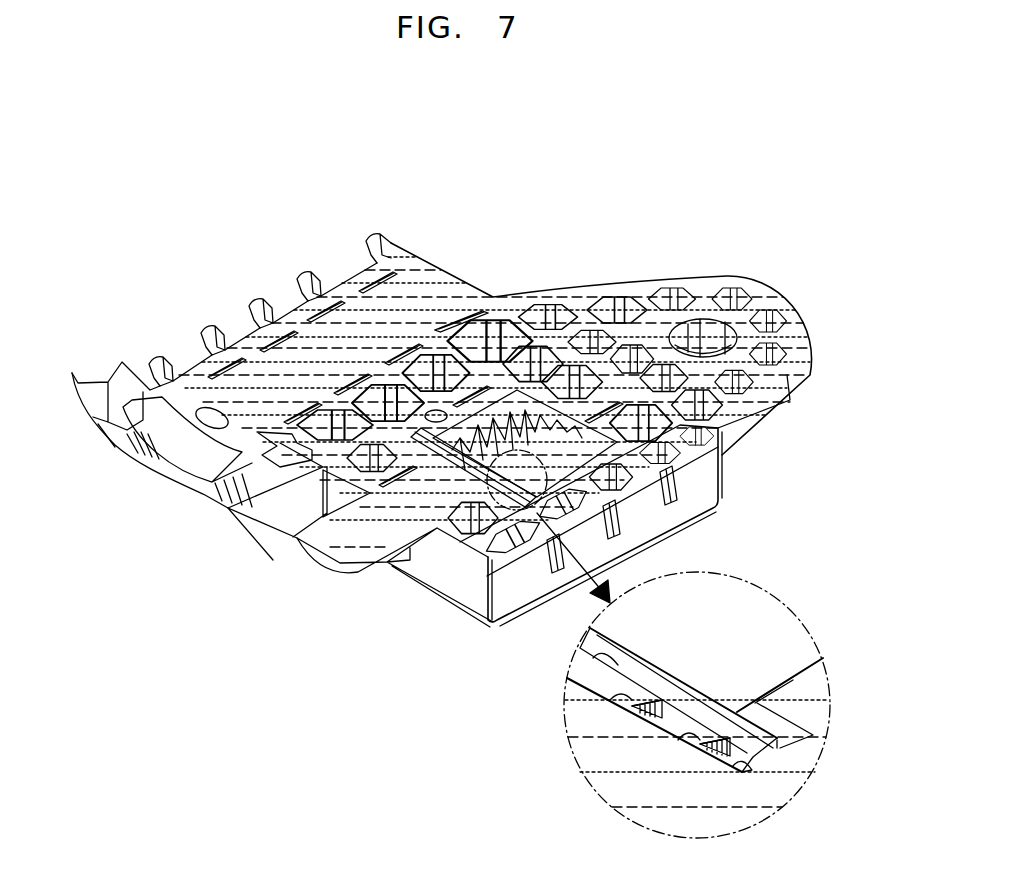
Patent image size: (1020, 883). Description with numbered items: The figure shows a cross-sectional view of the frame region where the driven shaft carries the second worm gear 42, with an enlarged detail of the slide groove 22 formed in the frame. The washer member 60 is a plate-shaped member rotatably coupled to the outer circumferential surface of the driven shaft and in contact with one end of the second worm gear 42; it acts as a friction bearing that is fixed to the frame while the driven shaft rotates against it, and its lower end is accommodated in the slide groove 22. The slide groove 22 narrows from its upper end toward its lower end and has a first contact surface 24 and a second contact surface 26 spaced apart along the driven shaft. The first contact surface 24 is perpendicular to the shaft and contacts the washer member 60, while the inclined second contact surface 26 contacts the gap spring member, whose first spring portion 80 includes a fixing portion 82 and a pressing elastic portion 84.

The second worm gear 42 is at (522, 403).
The washer member 60 is at (618, 664).
The slide groove 22 is at (770, 713).
The first contact surface 24 is at (787, 730).
The second contact surface 26 is at (737, 760).
The first spring portion 80 is at (540, 830).
The fixing portion 82 is at (687, 738).
The pressing elastic portion 84 is at (613, 699).